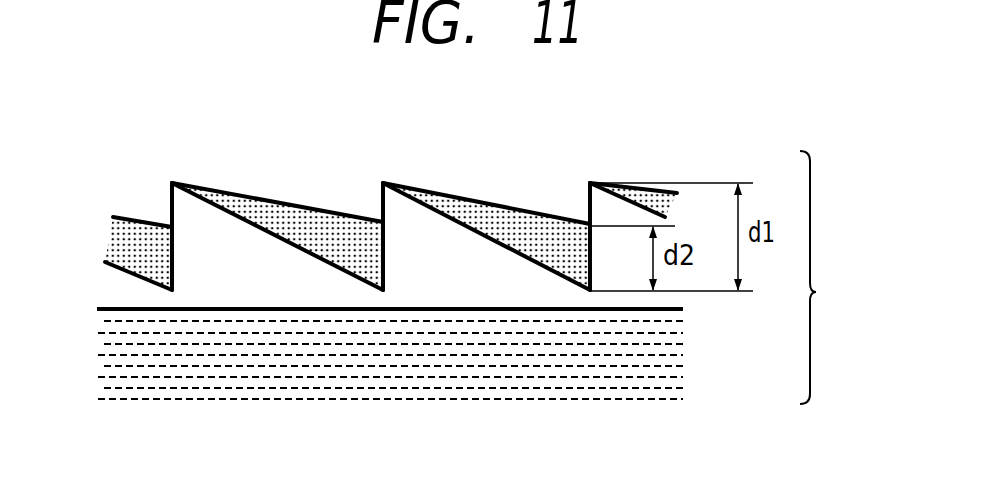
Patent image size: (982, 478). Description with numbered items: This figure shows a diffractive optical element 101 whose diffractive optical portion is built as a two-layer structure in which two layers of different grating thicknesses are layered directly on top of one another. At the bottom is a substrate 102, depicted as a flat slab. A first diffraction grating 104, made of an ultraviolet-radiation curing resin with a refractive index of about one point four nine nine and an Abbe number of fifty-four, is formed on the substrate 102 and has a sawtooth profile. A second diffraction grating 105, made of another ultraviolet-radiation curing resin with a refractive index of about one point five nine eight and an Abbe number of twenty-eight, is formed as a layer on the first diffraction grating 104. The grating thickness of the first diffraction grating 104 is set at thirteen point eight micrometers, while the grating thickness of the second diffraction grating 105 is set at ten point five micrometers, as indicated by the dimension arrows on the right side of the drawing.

The diffractive optical element 101 is at (480, 277).
The substrate 102 is at (632, 352).
The first diffraction grating 104 is at (248, 253).
The second diffraction grating 105 is at (518, 223).